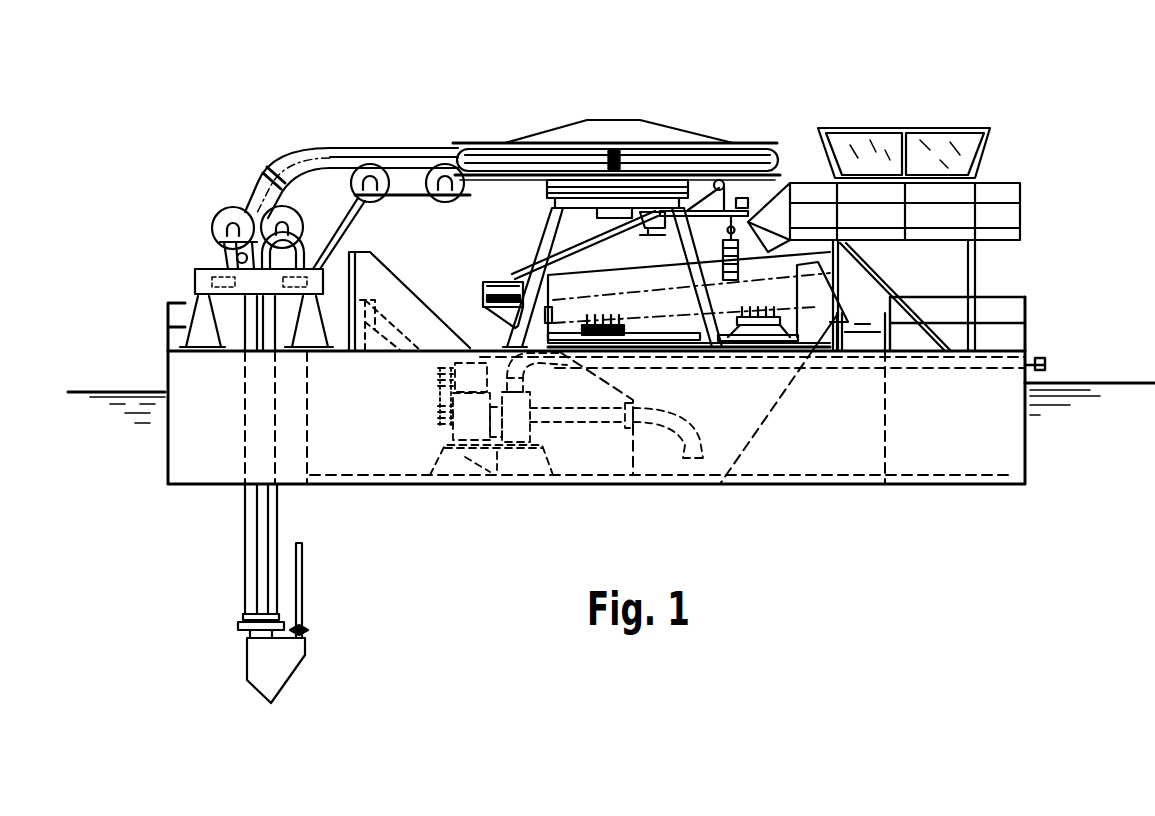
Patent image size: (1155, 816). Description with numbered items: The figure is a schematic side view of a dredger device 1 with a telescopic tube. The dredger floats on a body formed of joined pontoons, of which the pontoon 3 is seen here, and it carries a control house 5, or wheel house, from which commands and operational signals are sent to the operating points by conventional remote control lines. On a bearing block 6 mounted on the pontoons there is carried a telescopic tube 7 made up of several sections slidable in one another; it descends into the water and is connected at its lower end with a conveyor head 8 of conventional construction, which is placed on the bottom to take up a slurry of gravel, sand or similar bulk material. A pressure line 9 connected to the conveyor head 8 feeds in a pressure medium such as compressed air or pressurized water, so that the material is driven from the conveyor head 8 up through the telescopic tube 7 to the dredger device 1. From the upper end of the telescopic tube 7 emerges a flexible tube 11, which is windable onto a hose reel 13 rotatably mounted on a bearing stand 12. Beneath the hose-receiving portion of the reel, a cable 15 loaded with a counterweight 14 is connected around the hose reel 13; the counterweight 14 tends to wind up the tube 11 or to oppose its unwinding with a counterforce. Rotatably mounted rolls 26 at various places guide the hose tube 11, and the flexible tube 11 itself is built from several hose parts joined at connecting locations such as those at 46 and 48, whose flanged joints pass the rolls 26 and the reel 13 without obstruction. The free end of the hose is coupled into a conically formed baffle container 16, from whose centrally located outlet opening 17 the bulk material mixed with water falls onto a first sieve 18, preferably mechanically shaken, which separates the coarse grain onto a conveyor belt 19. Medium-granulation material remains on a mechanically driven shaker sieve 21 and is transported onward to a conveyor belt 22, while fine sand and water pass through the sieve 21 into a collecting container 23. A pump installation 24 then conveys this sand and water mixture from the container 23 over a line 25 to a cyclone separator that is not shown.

The dredger device 1 is at (768, 103).
The pontoon 3 is at (1012, 430).
The control house 5 is at (923, 128).
The bearing block 6 is at (205, 300).
The telescopic tube 7 is at (240, 544).
The conveyor head 8 is at (255, 669).
The pressure line 9 is at (300, 584).
The flexible tube 11 is at (333, 148).
The bearing stand 12 is at (550, 224).
The hose reel 13 is at (672, 124).
The counterweight 14 is at (742, 254).
The cable 15 is at (738, 200).
The baffle container 16 is at (567, 128).
The outlet opening 17 is at (605, 218).
The first sieve 18 is at (513, 277).
The conveyor belt 19 is at (486, 288).
The shaker sieve 21 is at (655, 292).
The conveyor belt 22 is at (857, 322).
The collecting container 23 is at (768, 412).
The pump installation 24 is at (545, 397).
The line 25 is at (700, 372).
The guide rolls 26 is at (440, 164).
The connecting location 46 is at (266, 175).
The connecting location 48 is at (618, 146).